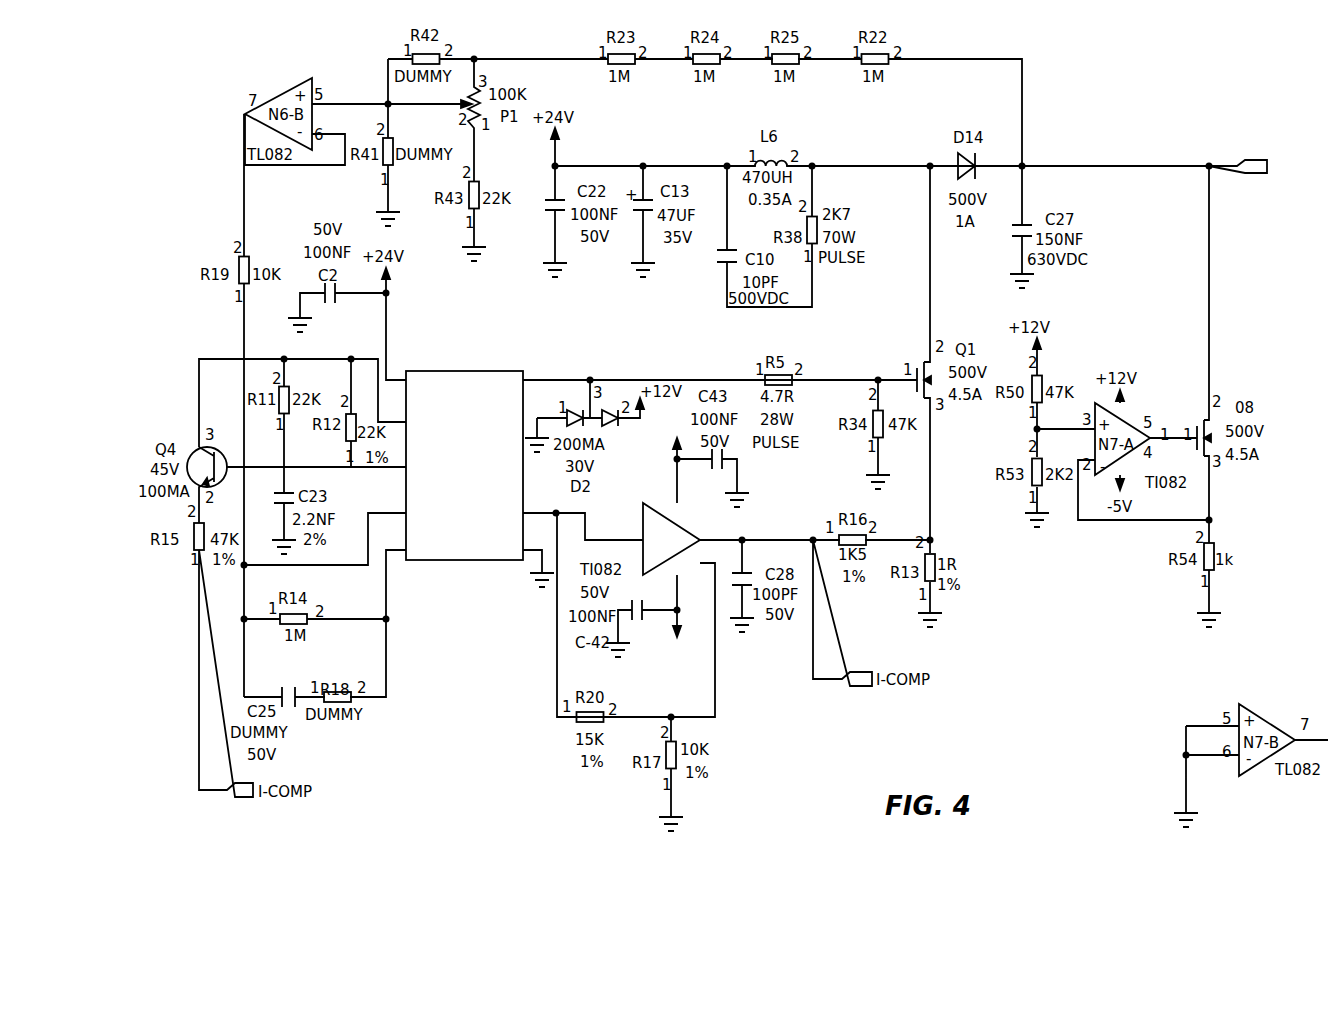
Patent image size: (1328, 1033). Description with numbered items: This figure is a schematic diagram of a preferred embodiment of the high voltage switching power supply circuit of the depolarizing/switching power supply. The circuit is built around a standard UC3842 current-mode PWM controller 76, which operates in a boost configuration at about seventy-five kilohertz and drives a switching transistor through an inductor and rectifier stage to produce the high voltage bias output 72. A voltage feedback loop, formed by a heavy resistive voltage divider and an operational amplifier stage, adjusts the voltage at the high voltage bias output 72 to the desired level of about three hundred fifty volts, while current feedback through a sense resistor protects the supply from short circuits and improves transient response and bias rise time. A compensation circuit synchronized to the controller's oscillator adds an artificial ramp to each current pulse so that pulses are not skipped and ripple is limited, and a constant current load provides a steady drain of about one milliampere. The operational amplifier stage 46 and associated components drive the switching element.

The high voltage bias output 72 is at (1252, 160).
The UC3842 current-mode PWM controller 76 is at (436, 371).
The operational amplifier N6-A 46 is at (673, 444).